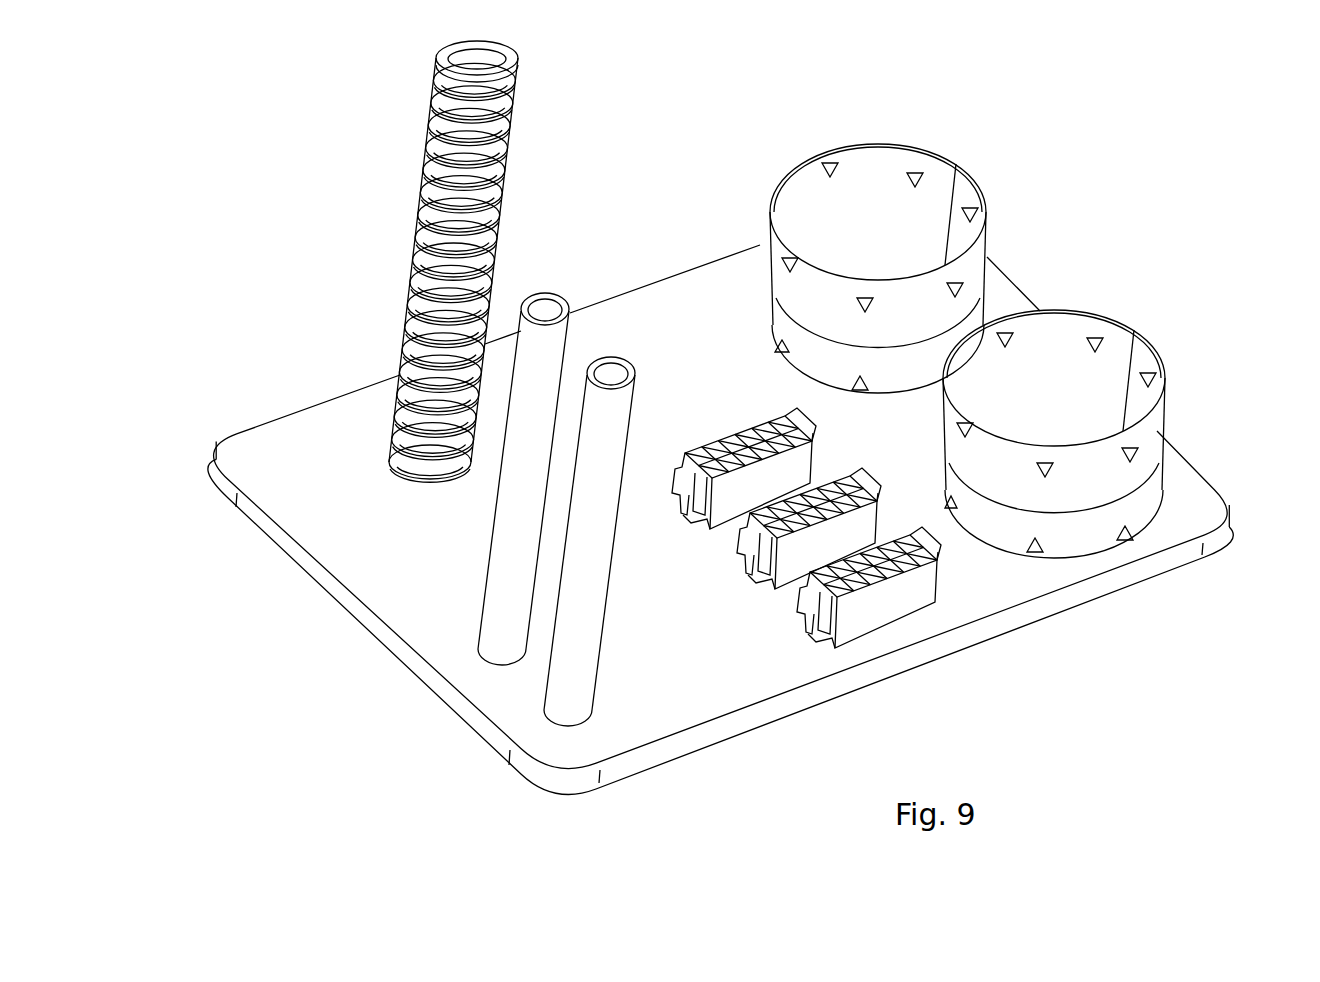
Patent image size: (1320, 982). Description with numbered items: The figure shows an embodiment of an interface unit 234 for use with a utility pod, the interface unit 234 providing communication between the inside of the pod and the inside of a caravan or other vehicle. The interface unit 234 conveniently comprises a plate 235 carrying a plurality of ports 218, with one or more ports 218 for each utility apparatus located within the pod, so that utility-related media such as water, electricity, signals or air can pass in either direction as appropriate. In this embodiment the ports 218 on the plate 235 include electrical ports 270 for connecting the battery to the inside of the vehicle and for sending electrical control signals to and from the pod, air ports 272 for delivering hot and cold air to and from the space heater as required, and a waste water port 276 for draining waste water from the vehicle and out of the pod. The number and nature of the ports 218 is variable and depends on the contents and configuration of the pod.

The interface unit 234 is at (653, 282).
The plate 235 is at (290, 450).
The waste water port 276 is at (417, 240).
The ports 218 is at (492, 627).
The air ports 272 is at (1067, 323).
The electrical ports 270 is at (808, 615).